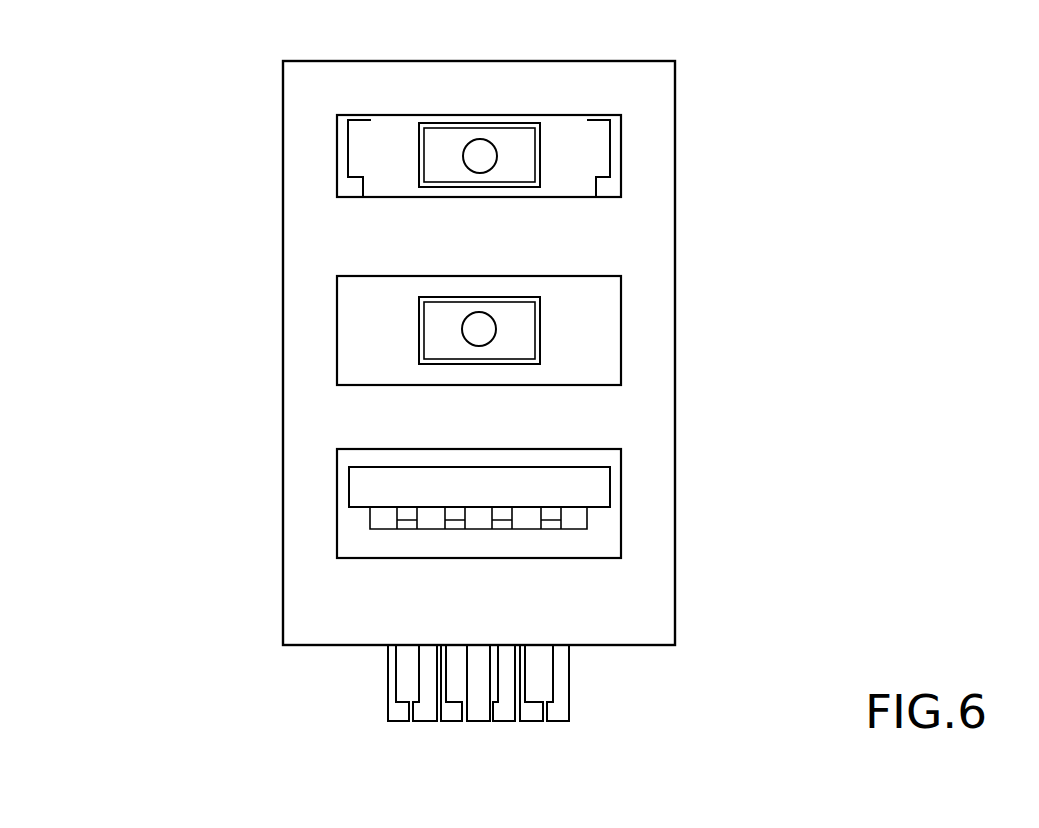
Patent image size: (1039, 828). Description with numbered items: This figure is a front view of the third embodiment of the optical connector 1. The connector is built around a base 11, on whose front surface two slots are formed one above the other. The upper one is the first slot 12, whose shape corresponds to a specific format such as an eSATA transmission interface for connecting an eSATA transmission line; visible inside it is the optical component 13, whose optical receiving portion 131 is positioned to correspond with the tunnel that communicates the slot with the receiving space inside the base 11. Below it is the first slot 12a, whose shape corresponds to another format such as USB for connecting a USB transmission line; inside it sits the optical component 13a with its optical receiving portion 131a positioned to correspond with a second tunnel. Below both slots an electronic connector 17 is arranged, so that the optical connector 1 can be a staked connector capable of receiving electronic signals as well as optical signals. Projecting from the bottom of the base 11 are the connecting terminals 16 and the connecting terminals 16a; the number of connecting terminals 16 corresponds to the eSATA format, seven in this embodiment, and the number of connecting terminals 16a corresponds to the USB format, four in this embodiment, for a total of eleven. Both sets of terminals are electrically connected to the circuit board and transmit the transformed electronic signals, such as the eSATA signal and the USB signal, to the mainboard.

The optical connector 1 is at (897, 128).
The base 11 is at (640, 232).
The first slot 12 is at (599, 149).
The optical component 13 is at (438, 162).
The optical receiving portion 131 is at (479, 150).
The first slot 12a is at (603, 335).
The optical component 13a is at (438, 343).
The optical receiving portion 131a is at (472, 325).
The electronic connector 17 is at (608, 487).
The connecting terminals 16 is at (560, 712).
The connecting terminals 16a is at (552, 673).